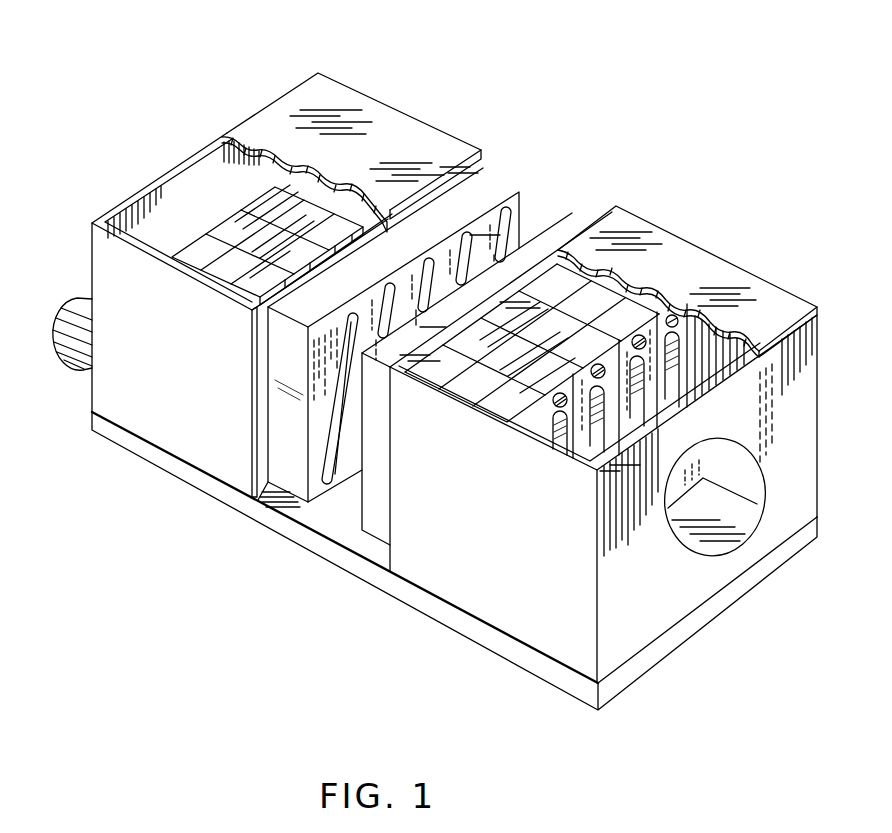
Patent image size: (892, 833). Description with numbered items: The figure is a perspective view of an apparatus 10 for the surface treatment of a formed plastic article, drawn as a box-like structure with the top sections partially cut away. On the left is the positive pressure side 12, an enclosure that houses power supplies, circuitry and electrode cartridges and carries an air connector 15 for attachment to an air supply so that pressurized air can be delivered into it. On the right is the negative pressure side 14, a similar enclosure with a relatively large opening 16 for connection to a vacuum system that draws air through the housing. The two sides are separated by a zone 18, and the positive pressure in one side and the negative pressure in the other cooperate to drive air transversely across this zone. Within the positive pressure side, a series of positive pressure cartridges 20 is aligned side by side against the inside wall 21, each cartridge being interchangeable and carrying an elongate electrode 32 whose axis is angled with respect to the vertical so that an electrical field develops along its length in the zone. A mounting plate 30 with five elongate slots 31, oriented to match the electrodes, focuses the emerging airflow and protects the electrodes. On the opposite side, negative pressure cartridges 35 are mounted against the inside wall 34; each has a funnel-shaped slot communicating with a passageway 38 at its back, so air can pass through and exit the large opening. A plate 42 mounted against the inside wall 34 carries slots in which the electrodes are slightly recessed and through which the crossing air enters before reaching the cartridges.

The apparatus 10 is at (473, 68).
The positive pressure side 12 is at (290, 105).
The negative pressure side 14 is at (703, 260).
The air connector 15 is at (78, 298).
The opening 16 is at (745, 517).
The zone 18 is at (323, 520).
The positive pressure cartridge 20 is at (267, 195).
The inside wall 21 is at (488, 170).
The mounting plate 30 is at (295, 418).
The elongate slot 31 is at (298, 492).
The electrode 32 is at (518, 238).
The inside wall 34 is at (604, 227).
The negative pressure cartridge 35 is at (557, 347).
The passageway 38 is at (600, 427).
The plate 42 is at (382, 537).